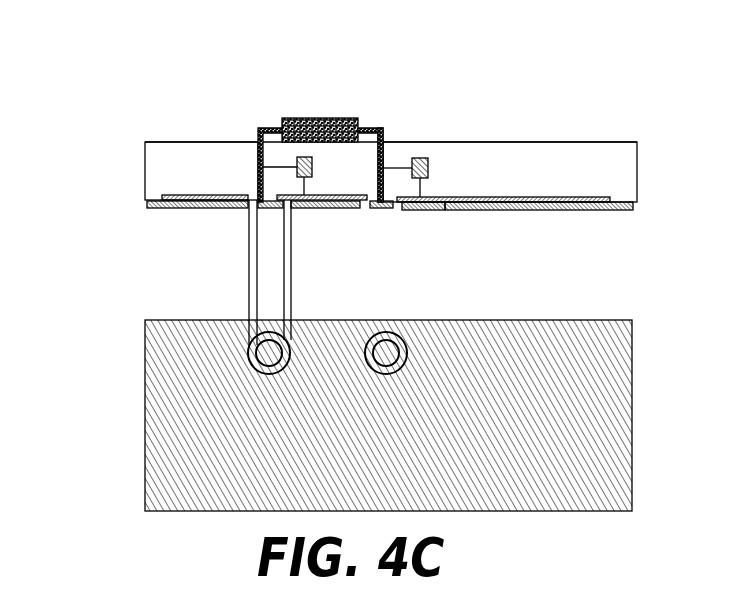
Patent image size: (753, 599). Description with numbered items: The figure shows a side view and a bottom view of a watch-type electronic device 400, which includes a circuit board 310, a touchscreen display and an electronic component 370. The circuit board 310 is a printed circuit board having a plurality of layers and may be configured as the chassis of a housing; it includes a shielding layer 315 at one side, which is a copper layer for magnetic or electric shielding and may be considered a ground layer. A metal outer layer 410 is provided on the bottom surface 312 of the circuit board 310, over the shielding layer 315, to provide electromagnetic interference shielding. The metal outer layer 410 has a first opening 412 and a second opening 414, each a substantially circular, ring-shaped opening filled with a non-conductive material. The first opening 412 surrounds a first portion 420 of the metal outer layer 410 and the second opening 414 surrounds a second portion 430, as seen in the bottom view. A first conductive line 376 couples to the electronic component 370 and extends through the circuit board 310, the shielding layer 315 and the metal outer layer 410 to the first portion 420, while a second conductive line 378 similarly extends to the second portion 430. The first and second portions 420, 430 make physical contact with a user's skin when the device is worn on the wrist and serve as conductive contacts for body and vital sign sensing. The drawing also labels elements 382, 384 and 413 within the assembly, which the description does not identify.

The watch-type electronic device 400 is at (177, 92).
The circuit board 310 is at (150, 176).
The bottom surface 312 is at (618, 202).
The shielding layer 315 is at (600, 197).
The electronic component 370 is at (342, 118).
The first conductive line 376 is at (267, 128).
The second conductive line 378 is at (385, 135).
The integrated circuit die 382 is at (297, 162).
The integrated circuit die 384 is at (430, 168).
The metal outer layer 410 is at (155, 208).
The first opening 412 is at (243, 218).
The lead 413 is at (290, 215).
The second opening 414 is at (400, 212).
The first portion 420 is at (250, 367).
The second portion 430 is at (383, 207).